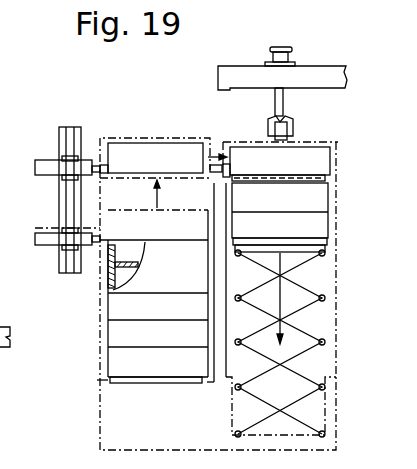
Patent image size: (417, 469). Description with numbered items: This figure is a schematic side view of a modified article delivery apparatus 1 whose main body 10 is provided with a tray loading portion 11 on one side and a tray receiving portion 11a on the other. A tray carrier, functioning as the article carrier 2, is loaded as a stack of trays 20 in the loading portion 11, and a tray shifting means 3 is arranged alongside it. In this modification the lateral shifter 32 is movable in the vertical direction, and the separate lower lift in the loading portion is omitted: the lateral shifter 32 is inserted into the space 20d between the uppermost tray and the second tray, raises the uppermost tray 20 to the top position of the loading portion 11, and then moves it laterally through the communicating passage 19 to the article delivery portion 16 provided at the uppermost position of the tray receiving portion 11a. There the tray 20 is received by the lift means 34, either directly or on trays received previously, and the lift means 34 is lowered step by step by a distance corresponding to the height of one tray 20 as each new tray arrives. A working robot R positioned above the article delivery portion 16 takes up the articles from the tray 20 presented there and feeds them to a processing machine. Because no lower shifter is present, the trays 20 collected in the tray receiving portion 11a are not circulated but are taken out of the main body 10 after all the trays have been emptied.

The article delivery apparatus 1 is at (127, 138).
The article carrier 2 is at (102, 348).
The tray shifting means 3 is at (71, 127).
The main body 10 is at (337, 298).
The tray loading portion 11 is at (102, 303).
The tray receiving portion 11a is at (320, 272).
The article delivery portion 16 is at (310, 146).
The communicating passage 19 is at (217, 150).
The tray 20 is at (162, 152).
The space 20d is at (108, 266).
The lateral shifter 32 is at (45, 161).
The lift means 34 is at (303, 352).
The working robot R is at (317, 73).